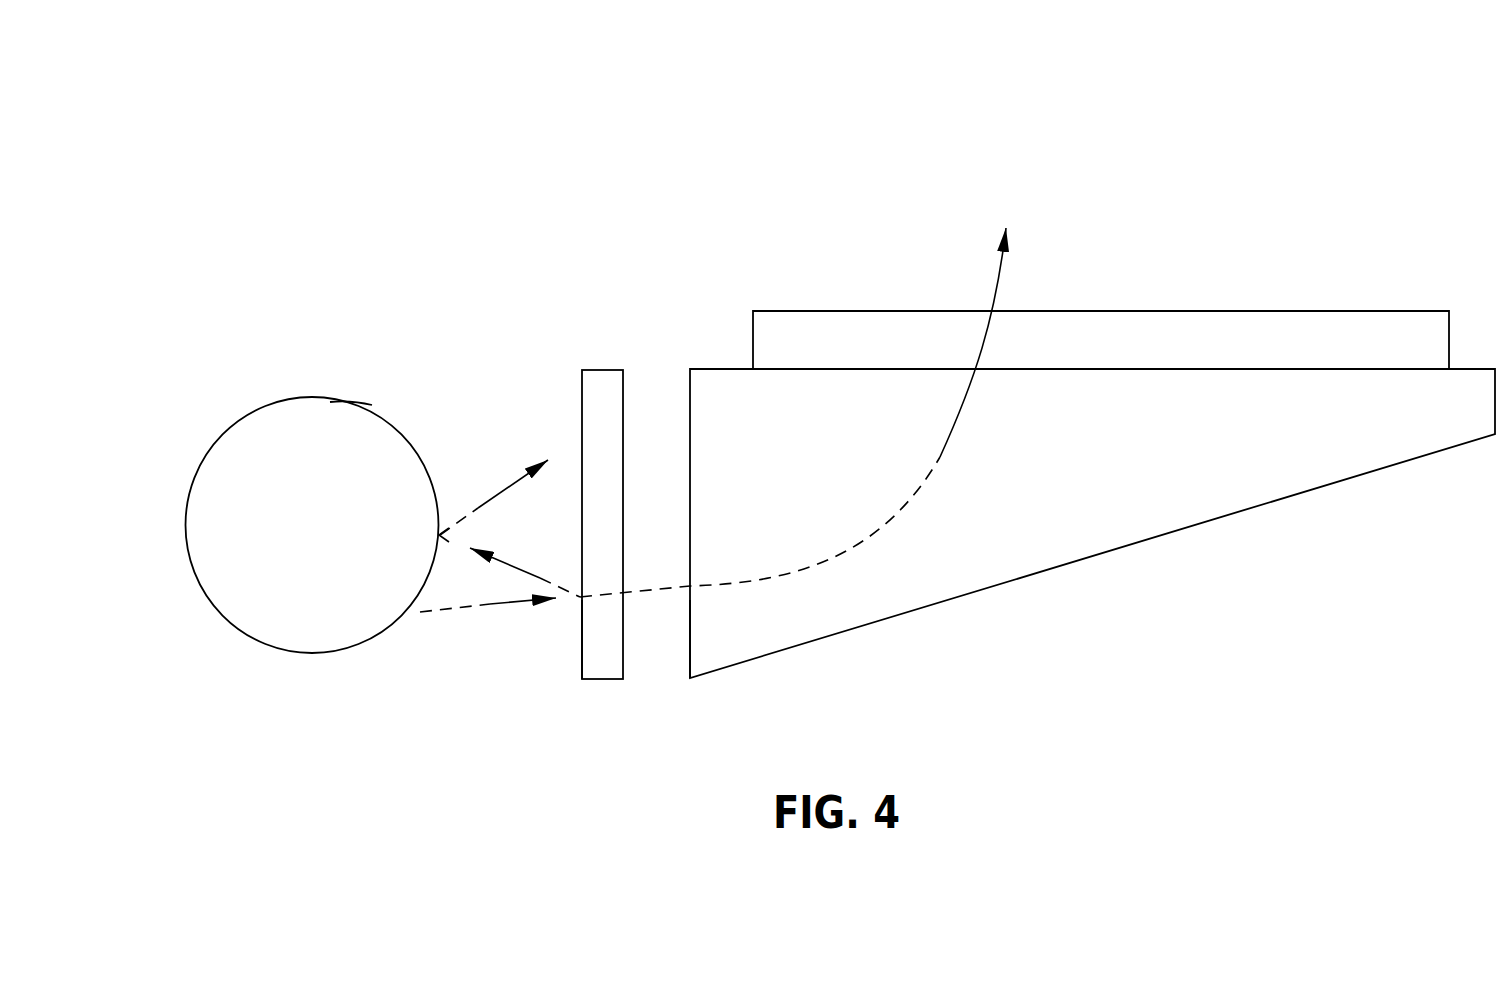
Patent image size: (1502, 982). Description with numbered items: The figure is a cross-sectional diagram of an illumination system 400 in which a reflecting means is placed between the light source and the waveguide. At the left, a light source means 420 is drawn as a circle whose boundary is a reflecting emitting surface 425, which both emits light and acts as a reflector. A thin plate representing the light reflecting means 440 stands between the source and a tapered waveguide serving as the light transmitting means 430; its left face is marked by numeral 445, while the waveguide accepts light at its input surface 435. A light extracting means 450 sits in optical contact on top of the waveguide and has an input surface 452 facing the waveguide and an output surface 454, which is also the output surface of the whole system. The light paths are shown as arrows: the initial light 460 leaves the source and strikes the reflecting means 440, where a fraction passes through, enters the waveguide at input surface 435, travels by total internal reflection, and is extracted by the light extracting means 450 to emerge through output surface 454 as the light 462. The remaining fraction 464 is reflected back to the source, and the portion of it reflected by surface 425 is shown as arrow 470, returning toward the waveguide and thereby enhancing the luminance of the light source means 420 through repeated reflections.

The illumination system 400 is at (1170, 156).
The light source means 420 is at (243, 447).
The reflecting emitting surface 425 is at (372, 406).
The light transmitting means 430 is at (1088, 536).
The input surface 435 is at (689, 666).
The light reflecting means 440 is at (602, 680).
The plate surface 445 is at (581, 661).
The light extracting means 450 is at (1375, 325).
The input surface 452 is at (1290, 368).
The output surface 454 is at (1183, 311).
The arrow 460 is at (500, 604).
The arrow 462 is at (804, 392).
The arrow 464 is at (512, 563).
The arrow 470 is at (506, 489).